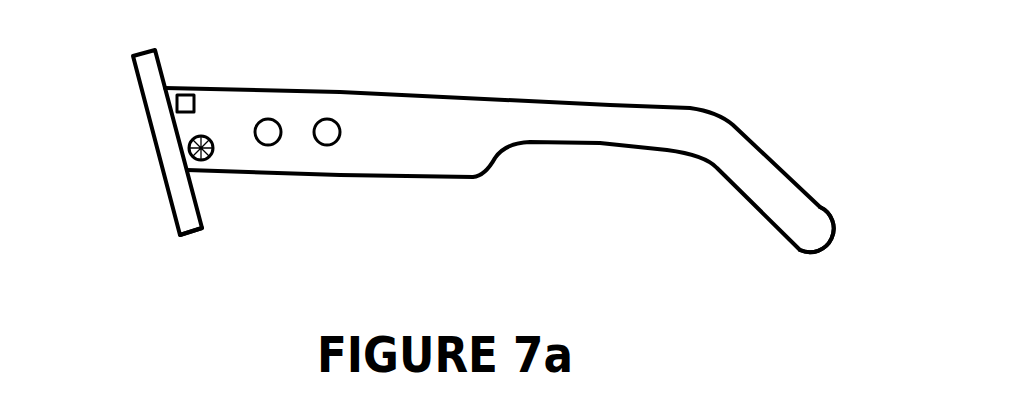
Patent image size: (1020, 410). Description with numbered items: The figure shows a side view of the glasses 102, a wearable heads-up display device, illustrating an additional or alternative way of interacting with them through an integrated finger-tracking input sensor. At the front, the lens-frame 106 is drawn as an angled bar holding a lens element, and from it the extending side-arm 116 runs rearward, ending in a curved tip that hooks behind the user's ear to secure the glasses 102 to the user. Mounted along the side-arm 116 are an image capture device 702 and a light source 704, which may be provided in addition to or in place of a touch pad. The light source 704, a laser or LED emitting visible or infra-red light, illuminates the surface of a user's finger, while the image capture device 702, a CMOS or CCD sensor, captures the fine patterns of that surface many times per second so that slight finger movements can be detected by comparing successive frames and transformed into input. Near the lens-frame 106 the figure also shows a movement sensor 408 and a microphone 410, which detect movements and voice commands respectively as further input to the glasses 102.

The glasses 102 is at (137, 90).
The movement sensor 408 is at (180, 96).
The microphone 410 is at (203, 160).
The image capture device 702 is at (262, 145).
The light source 704 is at (322, 145).
The lens-frame 106 is at (183, 237).
The side-arm 116 is at (805, 228).